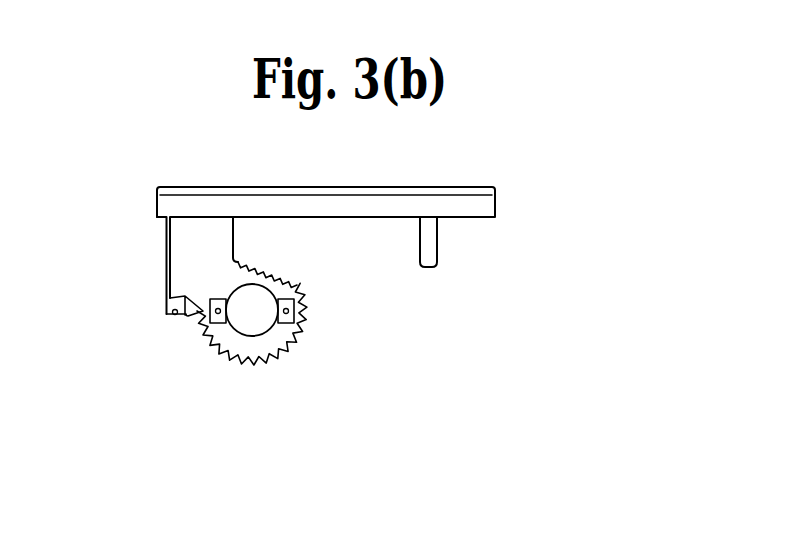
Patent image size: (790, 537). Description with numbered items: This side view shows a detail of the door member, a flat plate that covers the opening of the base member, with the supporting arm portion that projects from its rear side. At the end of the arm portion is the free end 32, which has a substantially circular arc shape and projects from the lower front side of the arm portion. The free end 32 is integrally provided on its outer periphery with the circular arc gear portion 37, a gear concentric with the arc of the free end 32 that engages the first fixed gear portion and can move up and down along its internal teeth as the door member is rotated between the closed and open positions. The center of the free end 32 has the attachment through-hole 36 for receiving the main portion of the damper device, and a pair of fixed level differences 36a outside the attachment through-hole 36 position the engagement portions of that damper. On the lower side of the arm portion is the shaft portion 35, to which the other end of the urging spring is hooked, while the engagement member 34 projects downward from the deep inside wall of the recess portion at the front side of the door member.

The free end 32 is at (272, 342).
The engagement member 34 is at (437, 245).
The shaft portion 35 is at (175, 316).
The attachment through-hole 36 is at (266, 301).
The fixed level differences 36a is at (300, 333).
The circular arc gear portion 37 is at (233, 360).